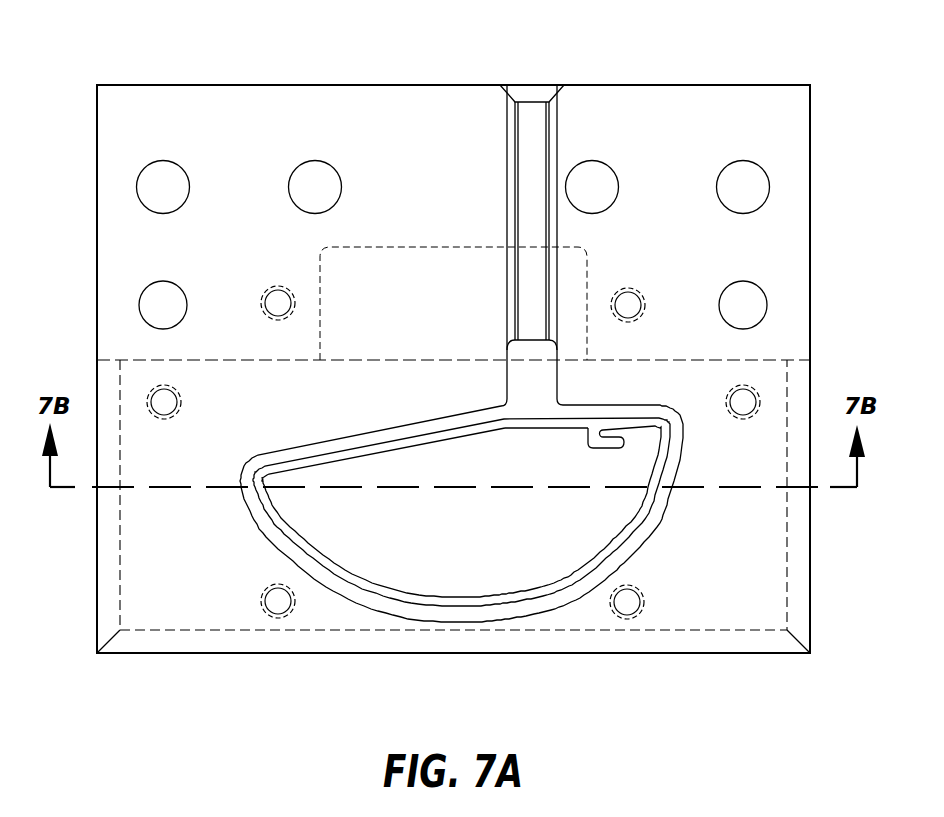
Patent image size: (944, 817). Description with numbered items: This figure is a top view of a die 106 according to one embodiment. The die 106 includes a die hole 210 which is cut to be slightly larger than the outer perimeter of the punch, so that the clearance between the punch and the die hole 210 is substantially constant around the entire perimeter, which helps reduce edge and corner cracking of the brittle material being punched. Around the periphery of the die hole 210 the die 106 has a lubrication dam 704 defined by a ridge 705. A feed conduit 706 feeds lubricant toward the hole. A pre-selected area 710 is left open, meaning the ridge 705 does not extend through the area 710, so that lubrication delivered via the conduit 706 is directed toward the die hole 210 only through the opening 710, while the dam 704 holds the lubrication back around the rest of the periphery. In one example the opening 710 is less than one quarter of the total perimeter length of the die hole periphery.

The die 106 is at (797, 375).
The feed conduit 706 is at (522, 138).
The ridge 705 is at (543, 590).
The lubrication dam 704 is at (627, 528).
The die hole 210 is at (409, 585).
The pre-selected area 710 is at (633, 428).